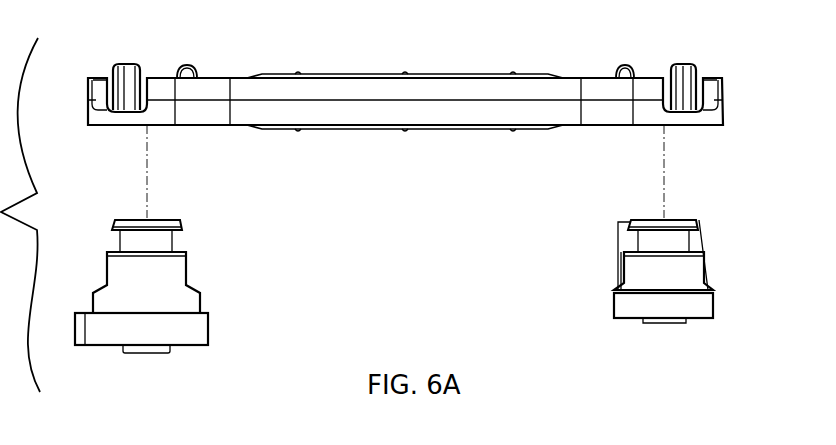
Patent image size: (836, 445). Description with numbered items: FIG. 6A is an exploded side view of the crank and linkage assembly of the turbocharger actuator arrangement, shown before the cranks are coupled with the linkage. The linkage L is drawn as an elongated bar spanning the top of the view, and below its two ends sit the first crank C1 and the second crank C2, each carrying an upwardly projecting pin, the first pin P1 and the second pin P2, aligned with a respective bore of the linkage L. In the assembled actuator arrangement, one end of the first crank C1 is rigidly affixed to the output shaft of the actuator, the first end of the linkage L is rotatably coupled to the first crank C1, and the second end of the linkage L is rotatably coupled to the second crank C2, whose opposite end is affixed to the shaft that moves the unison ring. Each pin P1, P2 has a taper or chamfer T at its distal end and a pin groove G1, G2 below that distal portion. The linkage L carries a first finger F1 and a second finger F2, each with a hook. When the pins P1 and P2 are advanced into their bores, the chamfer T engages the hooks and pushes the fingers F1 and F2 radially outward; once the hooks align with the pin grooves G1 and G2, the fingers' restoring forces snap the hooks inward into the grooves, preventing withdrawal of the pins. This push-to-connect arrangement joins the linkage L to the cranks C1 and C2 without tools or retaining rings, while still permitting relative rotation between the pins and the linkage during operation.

The linkage L is at (346, 116).
The first finger F1 is at (123, 80).
The second finger F2 is at (612, 76).
The first pin P1 is at (148, 243).
The second pin P2 is at (665, 229).
The first pin groove G1 is at (172, 243).
The second pin groove G2 is at (636, 242).
The taper or chamfer T is at (113, 224).
The first crank C1 is at (93, 333).
The second crank C2 is at (713, 305).